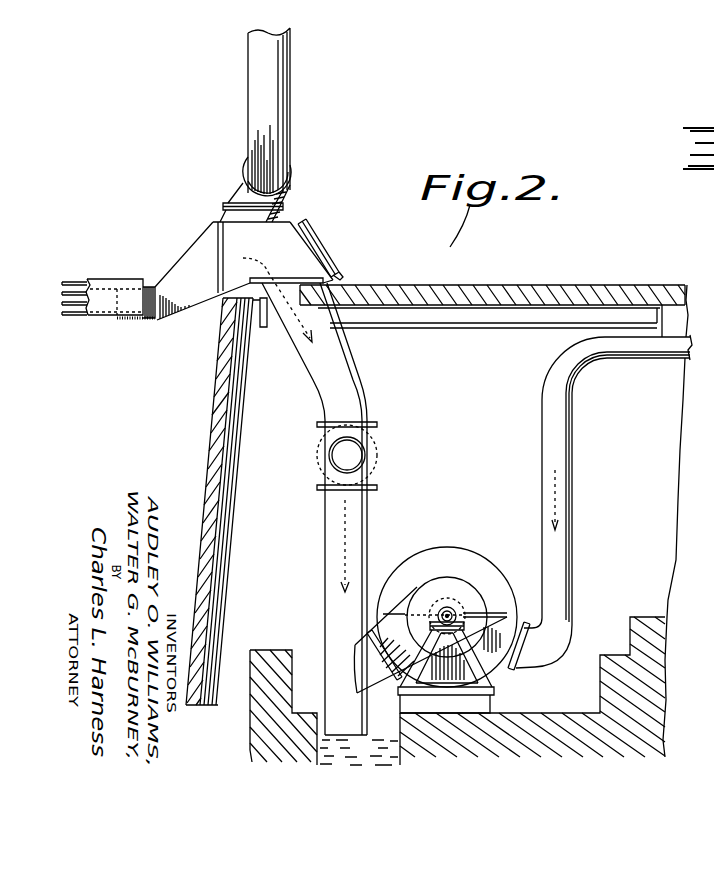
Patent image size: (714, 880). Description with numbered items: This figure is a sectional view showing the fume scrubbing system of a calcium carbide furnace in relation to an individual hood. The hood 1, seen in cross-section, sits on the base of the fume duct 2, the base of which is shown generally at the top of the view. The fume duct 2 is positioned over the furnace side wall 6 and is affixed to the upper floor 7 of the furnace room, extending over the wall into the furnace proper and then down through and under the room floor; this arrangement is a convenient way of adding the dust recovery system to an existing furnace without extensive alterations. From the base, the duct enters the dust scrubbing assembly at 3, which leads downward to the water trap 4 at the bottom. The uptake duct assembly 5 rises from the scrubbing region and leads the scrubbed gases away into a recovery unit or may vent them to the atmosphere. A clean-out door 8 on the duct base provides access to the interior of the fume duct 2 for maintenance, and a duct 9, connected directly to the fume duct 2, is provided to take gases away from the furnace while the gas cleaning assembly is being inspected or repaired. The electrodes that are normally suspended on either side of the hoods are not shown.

The hood 1 is at (105, 279).
The fume duct 2 is at (193, 242).
The dust scrubbing assembly entry 3 is at (325, 537).
The water trap 4 is at (318, 717).
The uptake duct assembly 5 is at (573, 415).
The furnace side wall 6 is at (243, 460).
The upper floor 7 is at (545, 285).
The clean-out door 8 is at (318, 240).
The duct 9 is at (290, 83).